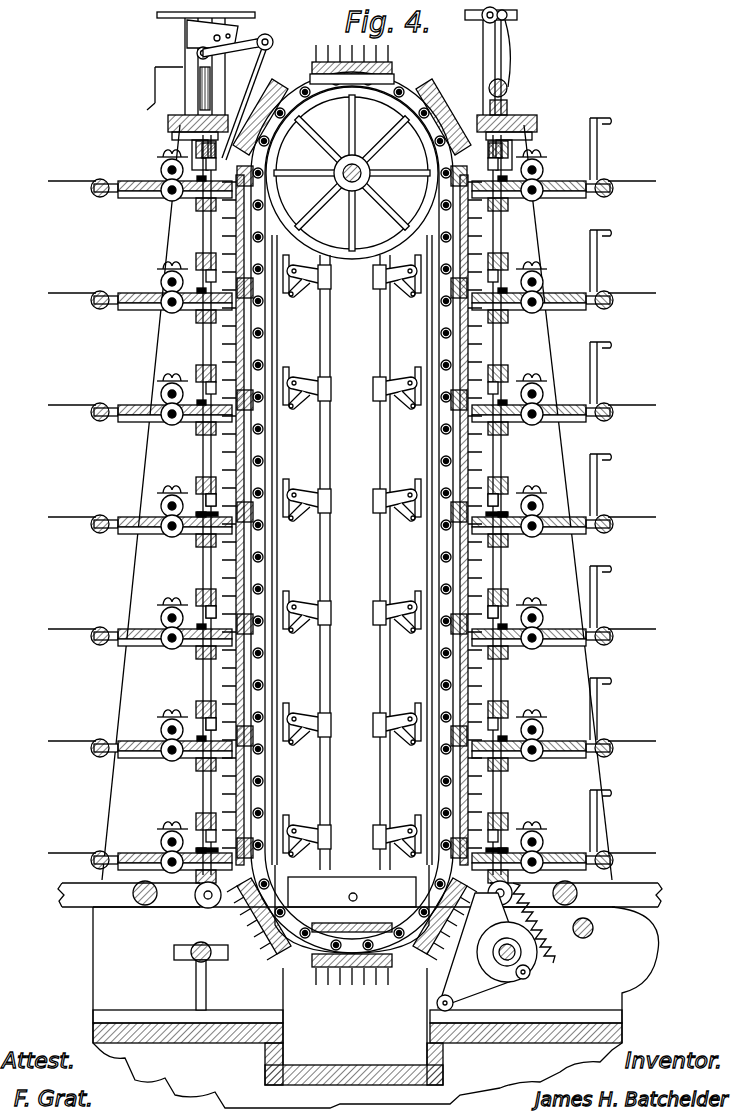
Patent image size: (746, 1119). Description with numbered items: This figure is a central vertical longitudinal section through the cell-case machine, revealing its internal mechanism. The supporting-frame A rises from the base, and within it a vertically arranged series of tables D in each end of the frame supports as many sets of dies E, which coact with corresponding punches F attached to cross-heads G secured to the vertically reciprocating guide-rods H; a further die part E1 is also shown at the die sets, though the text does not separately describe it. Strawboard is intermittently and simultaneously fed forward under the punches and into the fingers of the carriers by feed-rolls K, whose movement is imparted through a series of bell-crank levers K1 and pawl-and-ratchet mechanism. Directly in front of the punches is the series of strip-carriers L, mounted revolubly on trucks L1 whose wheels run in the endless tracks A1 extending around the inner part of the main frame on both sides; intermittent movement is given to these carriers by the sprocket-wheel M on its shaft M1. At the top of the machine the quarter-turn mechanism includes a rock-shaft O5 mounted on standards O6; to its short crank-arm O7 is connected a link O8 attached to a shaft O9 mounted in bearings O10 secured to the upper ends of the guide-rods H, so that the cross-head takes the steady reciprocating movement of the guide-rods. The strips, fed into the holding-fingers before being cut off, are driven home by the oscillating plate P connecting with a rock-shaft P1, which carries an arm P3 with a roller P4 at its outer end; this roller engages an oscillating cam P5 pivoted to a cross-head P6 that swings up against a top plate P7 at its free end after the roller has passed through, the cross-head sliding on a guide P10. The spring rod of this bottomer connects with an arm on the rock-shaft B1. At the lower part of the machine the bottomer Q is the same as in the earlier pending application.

The supporting-frame A is at (123, 612).
The endless tracks A1 is at (278, 688).
The rock-shaft B1 is at (360, 994).
The tables D is at (114, 186).
The dies E is at (196, 492).
The collar E1 is at (516, 490).
The punches F is at (198, 480).
The cross-heads G is at (198, 602).
The guide-rods H is at (203, 348).
The feed-rolls K is at (161, 508).
The bell-crank levers K1 is at (292, 292).
The strip-carriers L is at (232, 462).
The trucks L1 is at (262, 560).
The sprocket-wheel M is at (390, 108).
The shaft M1 is at (344, 160).
The oscillating plate P is at (250, 84).
The rock-shaft P1 is at (271, 35).
The arm P3 is at (242, 48).
The roller P4 is at (196, 52).
The oscillating cam P5 is at (188, 30).
The cross-head P6 is at (229, 21).
The top plate P7 is at (256, 15).
The guide P10 is at (150, 103).
The rock-shaft O5 is at (506, 22).
The standards O6 is at (483, 36).
The crank-arm O7 is at (505, 16).
The link O8 is at (510, 64).
The shaft O9 is at (489, 84).
The bearings O10 is at (508, 98).
The bottomer Q is at (496, 947).